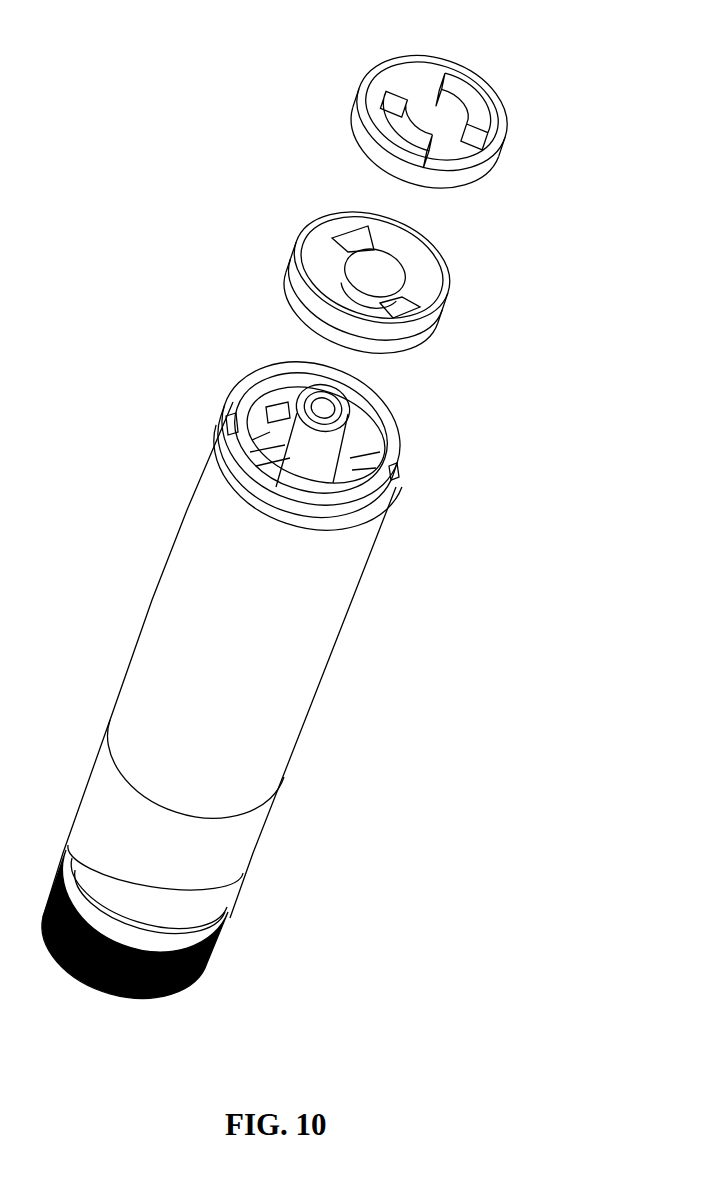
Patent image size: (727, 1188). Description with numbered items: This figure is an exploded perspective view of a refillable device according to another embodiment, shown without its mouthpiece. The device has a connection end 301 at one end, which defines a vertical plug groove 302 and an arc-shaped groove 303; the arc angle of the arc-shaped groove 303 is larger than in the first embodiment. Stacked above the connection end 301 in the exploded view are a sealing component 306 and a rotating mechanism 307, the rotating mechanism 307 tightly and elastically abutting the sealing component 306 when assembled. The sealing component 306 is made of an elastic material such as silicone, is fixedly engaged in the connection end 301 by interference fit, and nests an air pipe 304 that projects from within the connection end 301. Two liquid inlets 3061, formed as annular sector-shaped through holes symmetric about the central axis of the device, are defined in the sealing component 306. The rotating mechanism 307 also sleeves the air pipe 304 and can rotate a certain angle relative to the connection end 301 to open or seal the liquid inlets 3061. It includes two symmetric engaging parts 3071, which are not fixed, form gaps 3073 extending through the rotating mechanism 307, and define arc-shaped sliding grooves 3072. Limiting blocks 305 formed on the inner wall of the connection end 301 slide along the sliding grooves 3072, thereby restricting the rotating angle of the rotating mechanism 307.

The connection end 301 is at (387, 427).
The vertical plug groove 302 is at (397, 468).
The arc-shaped groove 303 is at (267, 497).
The air pipe 304 is at (233, 420).
The limiting block 305 is at (277, 405).
The sealing component 306 is at (433, 272).
The liquid inlet 3061 is at (343, 242).
The rotating mechanism 307 is at (487, 88).
The engaging part 3071 is at (402, 85).
The arc-shaped sliding groove 3072 is at (377, 83).
The gap 3073 is at (387, 141).